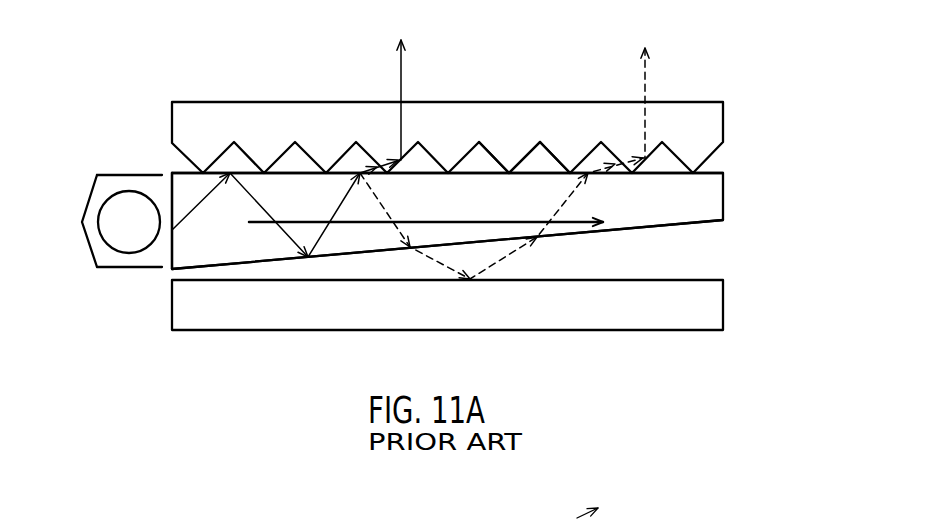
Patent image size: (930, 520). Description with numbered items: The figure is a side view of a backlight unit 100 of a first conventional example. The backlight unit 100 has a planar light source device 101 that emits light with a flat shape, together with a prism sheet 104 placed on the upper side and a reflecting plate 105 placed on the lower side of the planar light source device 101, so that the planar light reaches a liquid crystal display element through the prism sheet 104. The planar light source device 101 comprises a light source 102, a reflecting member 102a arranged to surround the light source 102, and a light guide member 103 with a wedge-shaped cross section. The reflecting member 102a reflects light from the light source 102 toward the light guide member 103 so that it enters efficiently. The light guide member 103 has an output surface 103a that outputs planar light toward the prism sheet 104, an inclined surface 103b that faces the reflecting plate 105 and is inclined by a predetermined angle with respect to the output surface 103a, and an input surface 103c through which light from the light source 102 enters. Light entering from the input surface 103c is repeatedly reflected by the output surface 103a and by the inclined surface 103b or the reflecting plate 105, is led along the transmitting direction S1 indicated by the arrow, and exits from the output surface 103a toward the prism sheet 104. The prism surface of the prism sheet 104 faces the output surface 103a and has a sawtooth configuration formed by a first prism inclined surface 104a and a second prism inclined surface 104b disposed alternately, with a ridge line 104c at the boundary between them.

The backlight unit 100 is at (707, 77).
The planar light source device 101 is at (129, 175).
The light source 102 is at (129, 237).
The reflecting member 102a is at (85, 240).
The light guide member 103 is at (710, 199).
The output surface 103a is at (712, 170).
The inclined surface 103b is at (652, 227).
The input surface 103c is at (172, 252).
The prism sheet 104 is at (710, 127).
The first prism inclined surface 104a is at (492, 158).
The second prism inclined surface 104b is at (531, 158).
The ridge line 104c is at (515, 163).
The reflecting plate 105 is at (710, 310).
The transmitting direction S1 is at (441, 217).